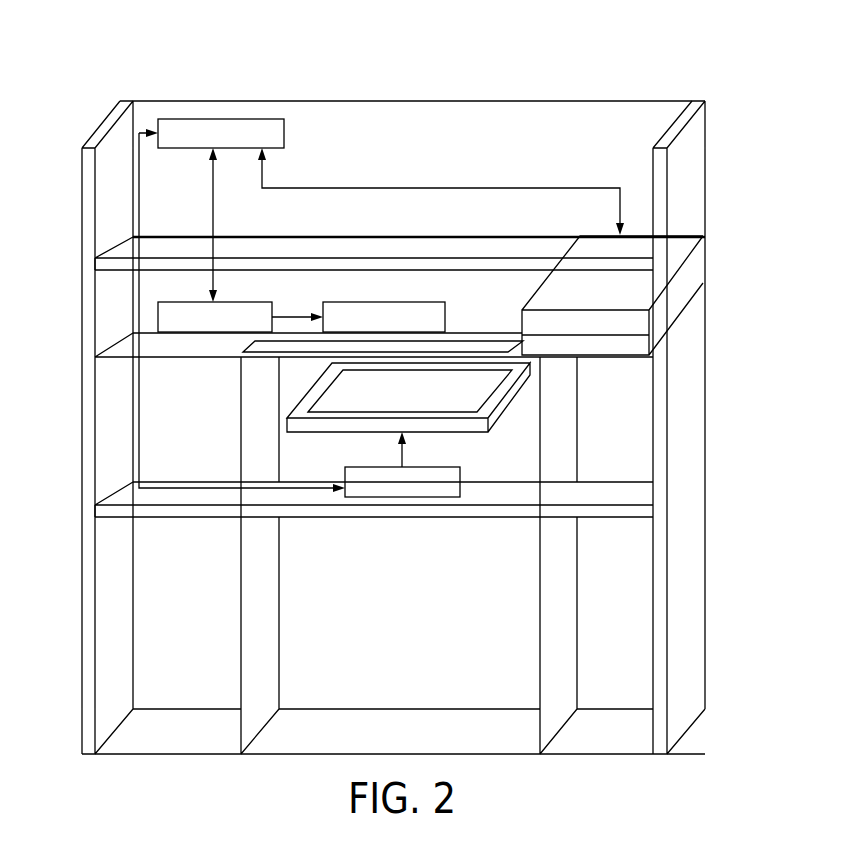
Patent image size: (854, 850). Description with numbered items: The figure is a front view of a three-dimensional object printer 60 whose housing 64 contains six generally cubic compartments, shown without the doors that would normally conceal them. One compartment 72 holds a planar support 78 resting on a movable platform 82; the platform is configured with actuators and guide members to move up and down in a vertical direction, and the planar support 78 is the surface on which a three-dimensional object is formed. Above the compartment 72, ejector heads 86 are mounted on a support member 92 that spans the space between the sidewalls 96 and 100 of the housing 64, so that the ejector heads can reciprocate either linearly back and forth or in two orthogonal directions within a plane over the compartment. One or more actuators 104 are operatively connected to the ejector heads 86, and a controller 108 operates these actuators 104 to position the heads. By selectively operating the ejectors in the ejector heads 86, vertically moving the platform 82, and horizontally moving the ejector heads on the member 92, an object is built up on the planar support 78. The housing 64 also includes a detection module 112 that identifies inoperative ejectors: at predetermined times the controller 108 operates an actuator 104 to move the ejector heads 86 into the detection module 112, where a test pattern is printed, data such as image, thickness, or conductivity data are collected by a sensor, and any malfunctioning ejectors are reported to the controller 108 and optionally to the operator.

The printer 60 is at (138, 88).
The housing 64 is at (690, 352).
The compartment 72 is at (307, 470).
The planar support 78 is at (423, 406).
The movable platform 82 is at (510, 408).
The ejector heads 86 is at (445, 317).
The support member 92 is at (176, 360).
The sidewall 96 is at (82, 225).
The sidewall 100 is at (705, 122).
The actuators 104 is at (273, 308).
The controller 108 is at (284, 133).
The detection module 112 is at (692, 285).